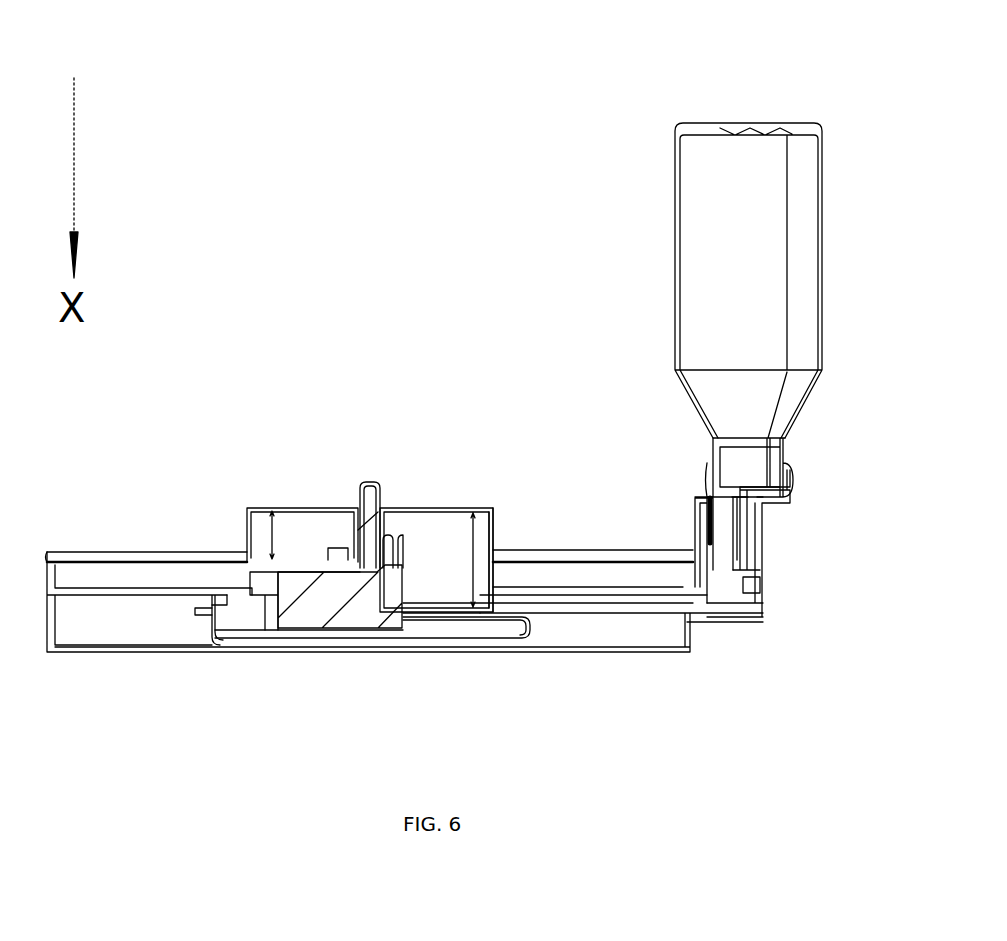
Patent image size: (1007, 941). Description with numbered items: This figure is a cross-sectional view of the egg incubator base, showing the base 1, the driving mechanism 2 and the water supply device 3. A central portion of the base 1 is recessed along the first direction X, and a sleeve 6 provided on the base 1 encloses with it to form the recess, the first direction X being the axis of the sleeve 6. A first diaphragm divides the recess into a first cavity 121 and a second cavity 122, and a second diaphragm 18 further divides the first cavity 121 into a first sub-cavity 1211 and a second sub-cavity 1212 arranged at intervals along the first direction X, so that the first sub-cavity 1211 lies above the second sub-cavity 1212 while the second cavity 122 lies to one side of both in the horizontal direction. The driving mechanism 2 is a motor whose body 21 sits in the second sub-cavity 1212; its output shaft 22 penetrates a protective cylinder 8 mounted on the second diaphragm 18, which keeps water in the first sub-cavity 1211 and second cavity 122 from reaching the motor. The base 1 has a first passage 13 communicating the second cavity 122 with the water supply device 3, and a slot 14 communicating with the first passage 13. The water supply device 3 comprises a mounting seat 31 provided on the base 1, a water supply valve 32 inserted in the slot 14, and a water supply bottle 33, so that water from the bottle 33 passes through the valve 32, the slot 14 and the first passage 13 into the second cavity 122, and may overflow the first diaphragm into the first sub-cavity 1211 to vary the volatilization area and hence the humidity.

The base 1 is at (130, 575).
The first cavity 121 is at (238, 400).
The first sub-cavity 1211 is at (278, 507).
The second sub-cavity 1212 is at (240, 600).
The second cavity 122 is at (442, 510).
The sleeve 6 is at (492, 508).
The protective cylinder 8 is at (362, 512).
The output shaft 22 is at (368, 487).
The second diaphragm 18 is at (270, 572).
The body 21 is at (347, 618).
The first passage 13 is at (625, 605).
The driving mechanism 2 is at (410, 622).
The slot 14 is at (717, 603).
The mounting seat 31 is at (697, 540).
The water supply valve 32 is at (705, 500).
The water supply bottle 33 is at (712, 497).
The water supply device 3 is at (540, 442).